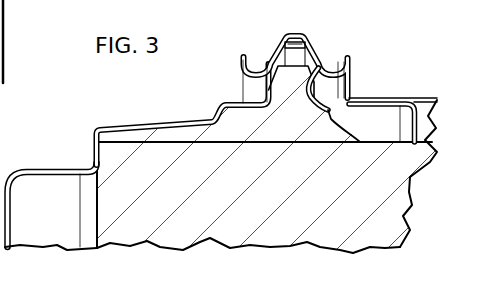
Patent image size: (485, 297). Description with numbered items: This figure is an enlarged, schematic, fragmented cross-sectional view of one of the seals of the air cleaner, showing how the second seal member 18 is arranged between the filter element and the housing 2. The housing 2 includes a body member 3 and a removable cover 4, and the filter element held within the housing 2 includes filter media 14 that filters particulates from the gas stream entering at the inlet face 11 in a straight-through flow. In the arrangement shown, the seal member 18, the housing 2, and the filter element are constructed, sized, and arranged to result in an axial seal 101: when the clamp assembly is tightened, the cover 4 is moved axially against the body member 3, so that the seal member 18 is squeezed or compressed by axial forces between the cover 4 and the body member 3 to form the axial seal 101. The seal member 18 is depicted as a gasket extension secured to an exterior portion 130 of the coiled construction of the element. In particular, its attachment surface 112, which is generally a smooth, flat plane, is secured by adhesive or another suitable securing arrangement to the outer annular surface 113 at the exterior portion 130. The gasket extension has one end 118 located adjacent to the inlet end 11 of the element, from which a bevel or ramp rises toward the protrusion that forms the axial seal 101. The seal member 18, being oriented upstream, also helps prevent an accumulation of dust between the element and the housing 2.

The housing 2 is at (420, 100).
The body member 3 is at (405, 97).
The removable cover 4 is at (43, 172).
The inlet face 11 is at (95, 217).
The filter media 14 is at (127, 230).
The second seal member 18 is at (329, 110).
The axial seal 101 is at (265, 92).
The attachment surface 112 is at (255, 141).
The outer annular surface 113 is at (378, 142).
The end 118 is at (96, 130).
The exterior portion 130 is at (284, 142).